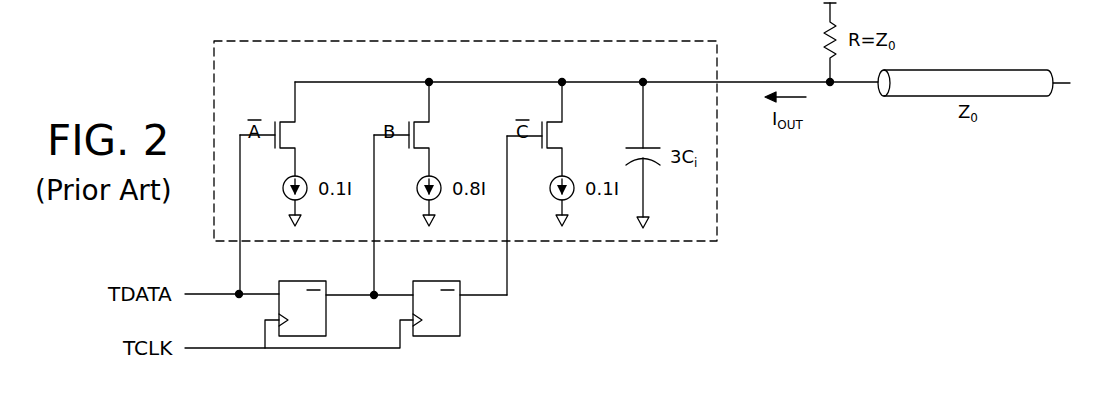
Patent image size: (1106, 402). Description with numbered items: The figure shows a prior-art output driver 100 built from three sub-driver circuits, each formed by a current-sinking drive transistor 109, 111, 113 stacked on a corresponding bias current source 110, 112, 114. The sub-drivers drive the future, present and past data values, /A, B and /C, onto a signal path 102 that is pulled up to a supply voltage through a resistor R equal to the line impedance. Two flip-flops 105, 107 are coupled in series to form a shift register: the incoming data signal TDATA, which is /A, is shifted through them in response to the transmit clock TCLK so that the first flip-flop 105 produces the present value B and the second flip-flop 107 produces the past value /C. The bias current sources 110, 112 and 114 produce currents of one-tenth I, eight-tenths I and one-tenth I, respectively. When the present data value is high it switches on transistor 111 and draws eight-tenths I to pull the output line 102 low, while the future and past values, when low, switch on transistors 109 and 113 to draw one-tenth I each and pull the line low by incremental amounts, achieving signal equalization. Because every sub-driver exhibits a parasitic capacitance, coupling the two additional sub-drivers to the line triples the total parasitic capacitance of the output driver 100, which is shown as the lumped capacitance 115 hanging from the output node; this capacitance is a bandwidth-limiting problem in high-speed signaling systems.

The output driver 100 is at (562, 41).
The signal path 102 is at (907, 98).
The flip-flop 105 is at (296, 273).
The flip-flop 107 is at (430, 273).
The current-sinking drive transistor 109 is at (298, 128).
The bias current source 110 is at (302, 177).
The current-sinking drive transistor 111 is at (432, 128).
The bias current source 112 is at (436, 177).
The current-sinking drive transistor 113 is at (565, 128).
The bias current source 114 is at (570, 177).
The capacitor 115 is at (652, 168).